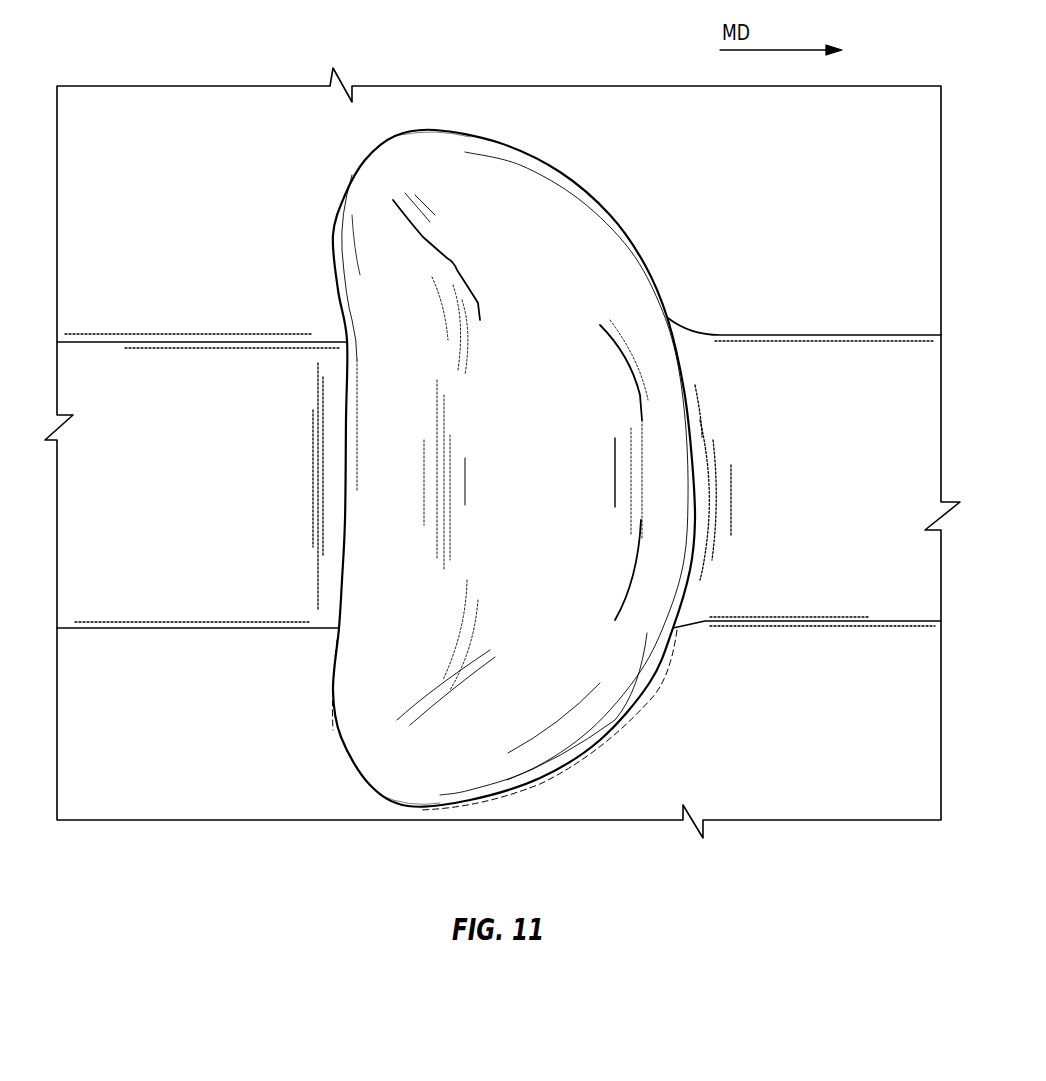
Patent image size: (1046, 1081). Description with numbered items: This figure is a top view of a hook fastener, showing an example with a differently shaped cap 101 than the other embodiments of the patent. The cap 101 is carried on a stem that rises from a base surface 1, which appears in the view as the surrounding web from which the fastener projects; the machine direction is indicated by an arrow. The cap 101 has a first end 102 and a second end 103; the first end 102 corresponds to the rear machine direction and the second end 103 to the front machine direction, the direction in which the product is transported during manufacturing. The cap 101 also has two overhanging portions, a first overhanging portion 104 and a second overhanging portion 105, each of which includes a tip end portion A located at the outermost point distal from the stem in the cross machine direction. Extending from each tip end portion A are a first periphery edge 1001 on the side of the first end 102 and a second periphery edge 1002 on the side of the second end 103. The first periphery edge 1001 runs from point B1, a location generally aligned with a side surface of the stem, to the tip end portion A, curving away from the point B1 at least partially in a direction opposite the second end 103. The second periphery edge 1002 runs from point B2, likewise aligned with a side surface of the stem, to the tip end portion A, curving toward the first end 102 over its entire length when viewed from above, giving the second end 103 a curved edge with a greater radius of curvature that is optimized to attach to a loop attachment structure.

The base surface 1 is at (878, 421).
The cap 101 is at (572, 228).
The first end 102 is at (377, 435).
The second end 103 is at (660, 368).
The first overhanging portion 104 is at (437, 148).
The second overhanging portion 105 is at (433, 742).
The first periphery edge 1001 is at (353, 173).
The second periphery edge 1002 is at (538, 153).
The tip end portion A is at (453, 132).
The point B1 is at (347, 333).
The point B2 is at (738, 660).